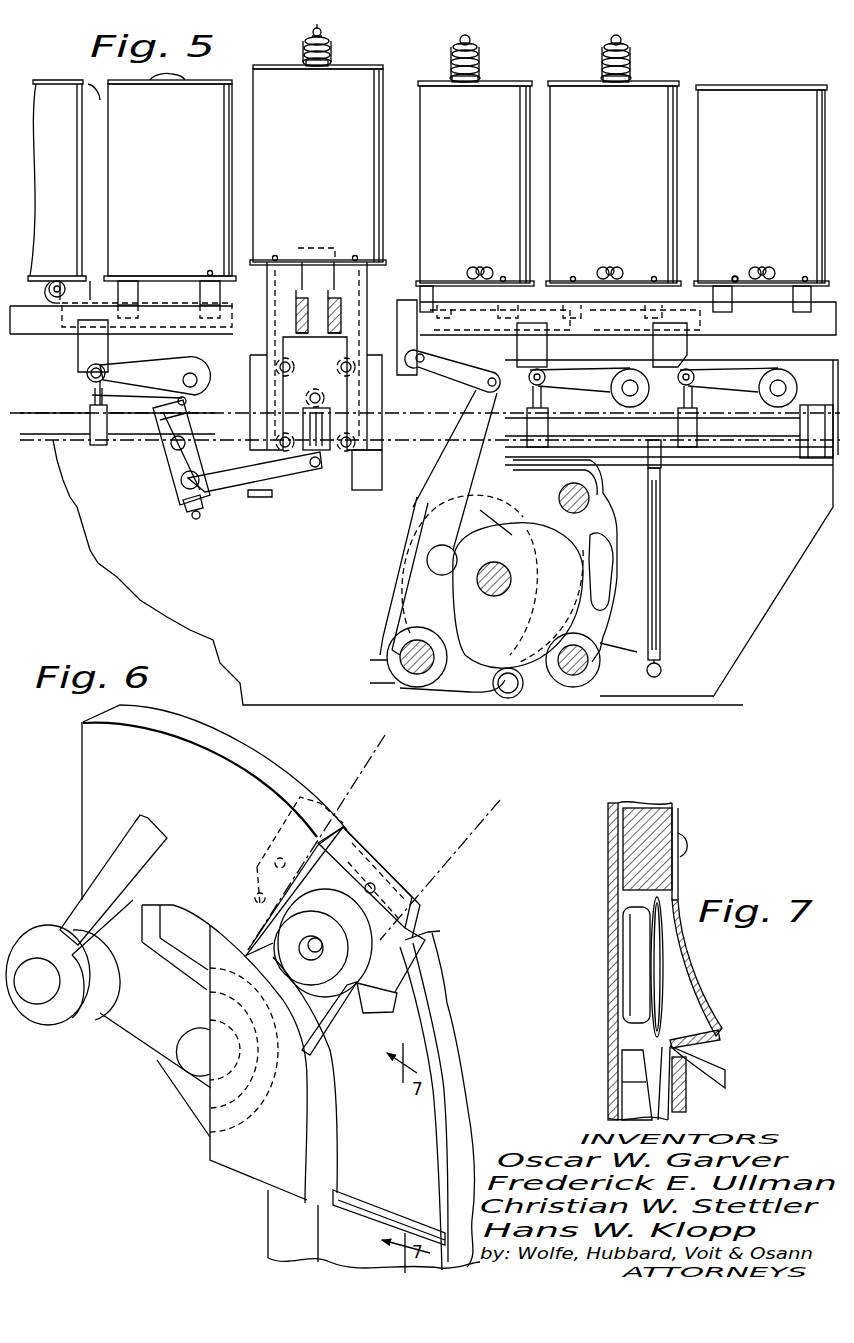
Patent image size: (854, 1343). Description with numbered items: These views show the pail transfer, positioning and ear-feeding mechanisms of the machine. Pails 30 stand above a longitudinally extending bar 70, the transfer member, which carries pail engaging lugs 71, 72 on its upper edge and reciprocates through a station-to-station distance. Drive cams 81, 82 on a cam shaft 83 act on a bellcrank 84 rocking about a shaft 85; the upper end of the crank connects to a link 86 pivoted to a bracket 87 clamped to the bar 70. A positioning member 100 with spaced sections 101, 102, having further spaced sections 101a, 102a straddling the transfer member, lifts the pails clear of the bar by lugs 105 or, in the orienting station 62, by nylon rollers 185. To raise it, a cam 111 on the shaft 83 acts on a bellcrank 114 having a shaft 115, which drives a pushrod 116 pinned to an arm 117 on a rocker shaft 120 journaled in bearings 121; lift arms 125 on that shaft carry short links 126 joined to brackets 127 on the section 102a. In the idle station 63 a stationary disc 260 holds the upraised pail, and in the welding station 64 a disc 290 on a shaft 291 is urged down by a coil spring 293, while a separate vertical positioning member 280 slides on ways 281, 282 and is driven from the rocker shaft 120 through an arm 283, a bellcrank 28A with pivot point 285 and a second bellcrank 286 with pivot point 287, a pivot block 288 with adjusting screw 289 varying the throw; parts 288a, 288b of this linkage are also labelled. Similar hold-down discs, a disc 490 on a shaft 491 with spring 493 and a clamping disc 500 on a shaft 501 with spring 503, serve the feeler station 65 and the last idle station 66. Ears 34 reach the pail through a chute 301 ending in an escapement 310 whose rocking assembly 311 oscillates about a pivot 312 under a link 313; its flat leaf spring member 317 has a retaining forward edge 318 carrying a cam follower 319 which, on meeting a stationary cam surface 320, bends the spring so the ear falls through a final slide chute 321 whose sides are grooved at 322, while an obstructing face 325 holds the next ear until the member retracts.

In FIG. 5, the ink fountain canister 30 is at (112, 98).
In FIG. 5, the fastening nut / roller member 34 is at (478, 266).
In FIG. 6, the fastening nut / roller member 34 is at (386, 864).
In FIG. 7, the fastening nut / roller member 34 is at (626, 976).
In FIG. 5, the orienting station 62 is at (50, 96).
In FIG. 5, the idle station 63 is at (198, 98).
In FIG. 5, the welding station 64 is at (348, 82).
In FIG. 5, the canister 65 is at (506, 96).
In FIG. 5, the last station 66 is at (641, 96).
In FIG. 5, the transfer member bar 70 is at (38, 334).
In FIG. 5, the pail engaging lug 71 is at (364, 317).
In FIG. 5, the pail engaging lug 72 is at (416, 317).
In FIG. 5, the drive cam 81 is at (540, 522).
In FIG. 5, the drive cam 82 is at (545, 590).
In FIG. 5, the cam shaft 83 is at (499, 597).
In FIG. 5, the bellcrank 84 is at (400, 614).
In FIG. 5, the shaft 85 is at (388, 661).
In FIG. 5, the link 86 is at (452, 375).
In FIG. 5, the bracket 87 is at (405, 351).
In FIG. 5, the positioning member 100 is at (735, 275).
In FIG. 5, the positioning member section 101 is at (230, 298).
In FIG. 5, the spaced section 101a is at (168, 300).
In FIG. 5, the positioning member section 102 is at (768, 332).
In FIG. 5, the spaced section 102a is at (762, 302).
In FIG. 5, the lug 105 is at (126, 286).
In FIG. 5, the cam 111 is at (495, 502).
In FIG. 5, the bellcrank 114 is at (655, 697).
In FIG. 5, the shaft 115 is at (578, 688).
In FIG. 5, the spring 116 is at (661, 591).
In FIG. 5, the arm 117 is at (676, 462).
In FIG. 5, the rocker shaft 120 is at (40, 440).
In FIG. 5, the bearing 121 is at (812, 462).
In FIG. 5, the lift arm 125 is at (562, 438).
In FIG. 5, the short link 126 is at (548, 406).
In FIG. 5, the bracket 127 is at (540, 350).
In FIG. 5, the roller 185 is at (57, 281).
In FIG. 5, the stationary disc 260 is at (152, 80).
In FIG. 5, the vertical positioning member 280 is at (383, 448).
In FIG. 5, the vertical way 281 is at (270, 498).
In FIG. 5, the vertical way 282 is at (370, 492).
In FIG. 5, the arm 283 is at (98, 447).
In FIG. 5, the pivot point 285 is at (198, 373).
In FIG. 5, the second bellcrank 286 is at (240, 494).
In FIG. 5, the pivot point 287 is at (182, 505).
In FIG. 5, the pivot block 288 is at (173, 486).
In FIG. 5, the link edge 288a is at (172, 470).
In FIG. 5, the pivot 288b is at (178, 403).
In FIG. 5, the adjusting screw 289 is at (194, 520).
In FIG. 5, the disc 290 is at (306, 63).
In FIG. 5, the shaft 291 is at (323, 38).
In FIG. 5, the coil spring 293 is at (312, 31).
In FIG. 5, the lever 28A is at (156, 367).
In FIG. 6, the chute 301 is at (462, 863).
In FIG. 6, the escapement 310 is at (448, 938).
In FIG. 6, the rocking assembly 311 is at (82, 798).
In FIG. 7, the rocking assembly 311 is at (626, 864).
In FIG. 6, the pivot 312 is at (188, 1060).
In FIG. 6, the link 313 is at (143, 860).
In FIG. 6, the flat leaf spring member 317 is at (347, 839).
In FIG. 7, the flat leaf spring member 317 is at (702, 980).
In FIG. 6, the retaining forward edge 318 is at (334, 1032).
In FIG. 7, the retaining forward edge 318 is at (720, 1044).
In FIG. 6, the cam follower 319 is at (372, 1012).
In FIG. 7, the cam follower 319 is at (728, 1085).
In FIG. 6, the stationary cam surface 320 is at (385, 1228).
In FIG. 7, the stationary cam surface 320 is at (690, 1072).
In FIG. 6, the final vertical slide chute 321 is at (268, 1226).
In FIG. 7, the final vertical slide chute 321 is at (628, 1069).
In FIG. 6, the groove 322 is at (374, 1269).
In FIG. 7, the groove 322 is at (640, 1085).
In FIG. 6, the obstructing face 325 is at (280, 774).
In FIG. 5, the disc 490 is at (488, 82).
In FIG. 5, the vertical shaft 491 is at (472, 42).
In FIG. 5, the coil spring 493 is at (462, 38).
In FIG. 5, the clamping disc 500 is at (580, 84).
In FIG. 5, the shaft 501 is at (622, 42).
In FIG. 5, the spring 503 is at (608, 42).